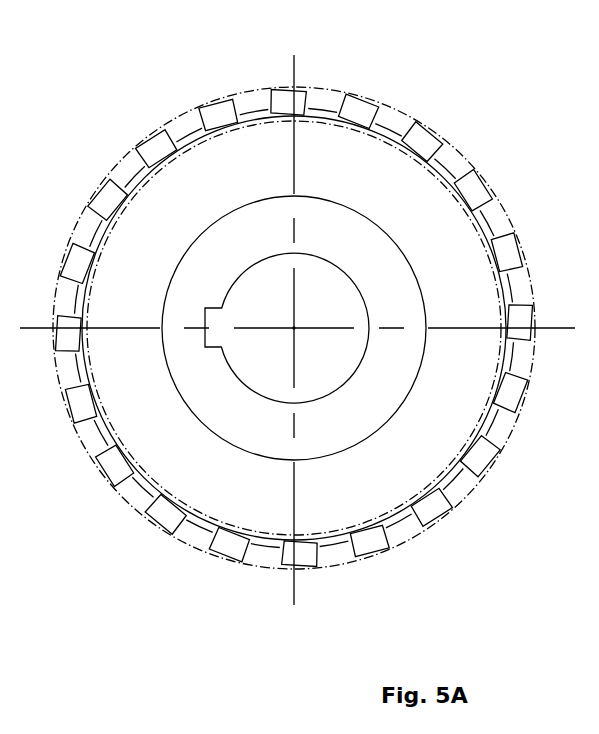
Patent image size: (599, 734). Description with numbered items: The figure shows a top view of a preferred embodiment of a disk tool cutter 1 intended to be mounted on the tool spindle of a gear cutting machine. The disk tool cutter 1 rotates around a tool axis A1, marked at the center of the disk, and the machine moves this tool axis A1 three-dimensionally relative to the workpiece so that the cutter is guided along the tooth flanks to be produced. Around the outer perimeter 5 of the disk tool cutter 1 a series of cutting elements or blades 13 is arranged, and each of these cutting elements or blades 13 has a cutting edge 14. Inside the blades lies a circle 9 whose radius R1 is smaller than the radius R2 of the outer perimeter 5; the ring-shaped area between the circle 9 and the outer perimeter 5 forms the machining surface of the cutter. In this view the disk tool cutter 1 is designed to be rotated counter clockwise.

The disk tool cutter 1 is at (33, 43).
The outer perimeter 5 is at (327, 88).
The circle 9 is at (408, 153).
The cutting elements or blades 13 is at (504, 237).
The cutting edge 14 is at (503, 252).
The tool axis A1 is at (294, 328).
The radius of the circle R1 is at (294, 328).
The radius of the outer perimeter R2 is at (294, 328).